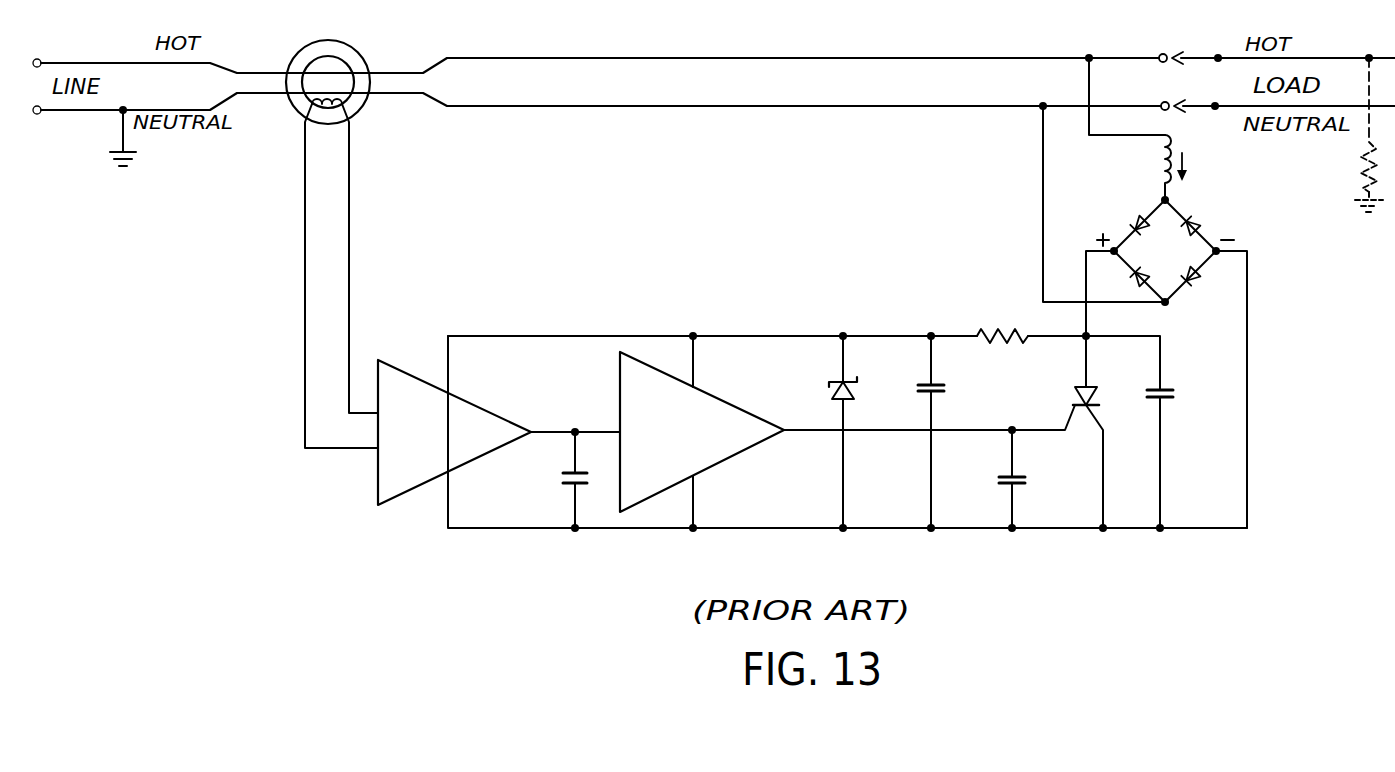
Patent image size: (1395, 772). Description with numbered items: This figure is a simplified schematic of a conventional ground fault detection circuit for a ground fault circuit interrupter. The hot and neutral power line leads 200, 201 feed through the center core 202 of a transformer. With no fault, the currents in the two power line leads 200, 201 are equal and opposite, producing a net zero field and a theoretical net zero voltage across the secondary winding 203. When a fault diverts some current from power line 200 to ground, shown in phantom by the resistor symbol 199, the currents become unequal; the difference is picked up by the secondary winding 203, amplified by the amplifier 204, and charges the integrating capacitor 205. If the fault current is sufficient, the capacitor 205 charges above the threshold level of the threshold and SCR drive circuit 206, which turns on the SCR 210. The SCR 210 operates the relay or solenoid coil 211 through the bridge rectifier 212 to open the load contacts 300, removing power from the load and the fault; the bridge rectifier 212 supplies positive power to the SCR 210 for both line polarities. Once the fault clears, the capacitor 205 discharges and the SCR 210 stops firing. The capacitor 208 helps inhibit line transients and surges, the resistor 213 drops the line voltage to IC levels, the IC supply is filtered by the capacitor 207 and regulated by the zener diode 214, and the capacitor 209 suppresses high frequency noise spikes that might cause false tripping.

The resistor symbol 199 is at (1360, 172).
The power line lead 200 is at (478, 58).
The power line lead 201 is at (470, 107).
The center core 202 is at (345, 55).
The secondary winding 203 is at (335, 127).
The amplifier 204 is at (467, 402).
The integrating capacitor 205 is at (568, 486).
The threshold and SCR drive circuit 206 is at (760, 445).
The capacitor 207 is at (936, 393).
The capacitor 208 is at (1168, 400).
The capacitor 209 is at (1021, 485).
The SCR 210 is at (1073, 398).
The relay or solenoid coil 211 is at (1160, 158).
The bridge rectifier 212 is at (1173, 207).
The resistor 213 is at (1003, 327).
The zener diode 214 is at (831, 380).
The load contacts 300 is at (1195, 56).